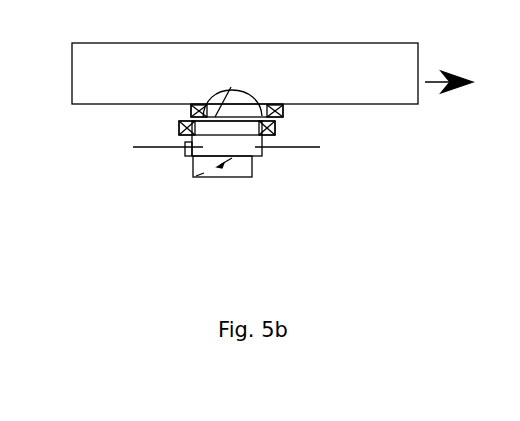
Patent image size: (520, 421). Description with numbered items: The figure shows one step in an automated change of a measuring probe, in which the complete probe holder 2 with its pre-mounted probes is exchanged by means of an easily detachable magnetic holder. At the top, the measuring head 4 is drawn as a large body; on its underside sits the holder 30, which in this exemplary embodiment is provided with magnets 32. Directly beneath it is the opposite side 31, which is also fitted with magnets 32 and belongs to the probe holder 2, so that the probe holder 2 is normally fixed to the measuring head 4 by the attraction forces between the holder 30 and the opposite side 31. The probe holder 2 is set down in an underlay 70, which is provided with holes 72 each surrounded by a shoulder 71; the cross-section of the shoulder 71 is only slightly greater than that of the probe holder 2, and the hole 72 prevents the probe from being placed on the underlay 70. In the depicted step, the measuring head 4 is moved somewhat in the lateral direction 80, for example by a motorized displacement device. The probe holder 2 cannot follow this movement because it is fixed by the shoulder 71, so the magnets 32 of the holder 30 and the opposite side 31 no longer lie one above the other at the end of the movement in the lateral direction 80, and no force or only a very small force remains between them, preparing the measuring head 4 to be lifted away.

The probe holder 2 is at (183, 140).
The measuring head 4 is at (402, 72).
The holder 30 is at (283, 111).
The opposite side 31 is at (275, 124).
The magnets 32 is at (208, 117).
The underlay 70 is at (268, 150).
The shoulder 71 is at (263, 162).
The hole 72 is at (193, 178).
The lateral direction 80 is at (432, 86).